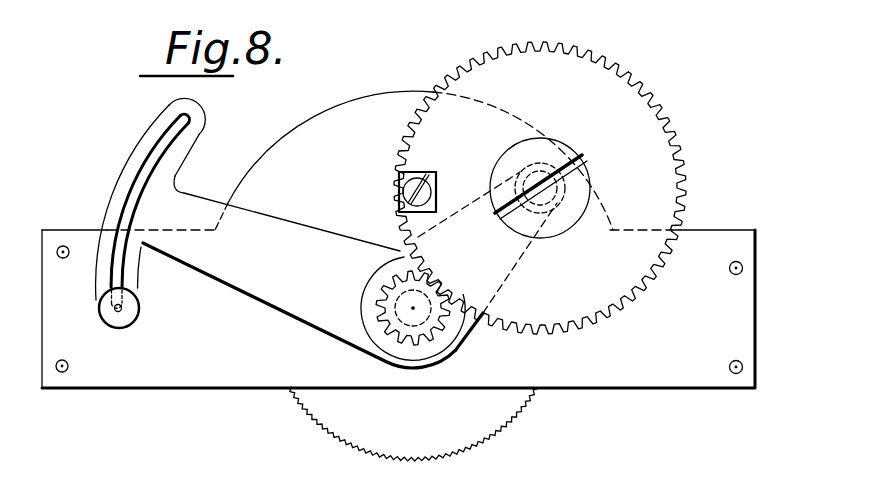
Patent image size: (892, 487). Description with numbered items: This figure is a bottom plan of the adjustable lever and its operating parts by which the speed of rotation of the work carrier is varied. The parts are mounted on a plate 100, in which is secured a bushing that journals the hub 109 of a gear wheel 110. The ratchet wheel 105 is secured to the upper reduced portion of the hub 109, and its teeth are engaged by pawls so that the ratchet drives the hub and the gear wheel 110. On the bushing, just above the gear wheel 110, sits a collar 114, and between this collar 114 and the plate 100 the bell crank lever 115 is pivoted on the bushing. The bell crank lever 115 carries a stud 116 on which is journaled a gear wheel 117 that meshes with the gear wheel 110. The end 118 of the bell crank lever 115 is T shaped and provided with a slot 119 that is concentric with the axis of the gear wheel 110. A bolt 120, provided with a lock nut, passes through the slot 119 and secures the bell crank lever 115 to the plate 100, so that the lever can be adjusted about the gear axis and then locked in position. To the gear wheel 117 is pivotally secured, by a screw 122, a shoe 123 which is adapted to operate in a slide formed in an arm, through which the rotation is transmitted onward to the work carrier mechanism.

The plate 100 is at (398, 239).
The ratchet wheel 105 is at (414, 424).
The hub 109 is at (436, 304).
The gear wheel 110 is at (440, 338).
The collar 114 is at (387, 345).
The bell crank lever 115 is at (304, 272).
The stud 116 is at (557, 200).
The gear wheel 117 is at (540, 188).
The end of the bell crank lever 118 is at (132, 183).
The slot 119 is at (167, 157).
The bolt 120 is at (127, 310).
The screw 122 is at (425, 199).
The shoe 123 is at (433, 174).